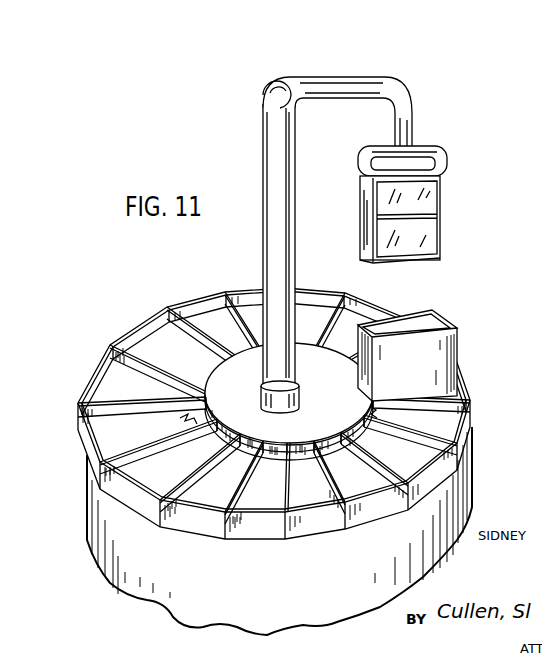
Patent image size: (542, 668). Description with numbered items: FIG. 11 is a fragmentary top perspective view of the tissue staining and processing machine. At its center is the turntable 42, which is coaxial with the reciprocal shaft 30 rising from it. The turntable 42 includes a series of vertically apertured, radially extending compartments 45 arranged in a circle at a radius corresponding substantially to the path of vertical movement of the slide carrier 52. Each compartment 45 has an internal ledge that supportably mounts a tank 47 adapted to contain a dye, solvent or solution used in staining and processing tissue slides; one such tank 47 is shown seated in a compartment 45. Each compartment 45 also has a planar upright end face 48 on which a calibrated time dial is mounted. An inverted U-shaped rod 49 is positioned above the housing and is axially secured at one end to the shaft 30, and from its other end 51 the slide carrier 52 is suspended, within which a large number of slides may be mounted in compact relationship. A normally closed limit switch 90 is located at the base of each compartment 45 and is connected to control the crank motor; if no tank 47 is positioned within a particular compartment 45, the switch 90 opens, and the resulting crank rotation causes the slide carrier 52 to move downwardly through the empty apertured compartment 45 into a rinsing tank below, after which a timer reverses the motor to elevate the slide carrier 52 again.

The turntable 42 is at (268, 461).
The compartment 45 is at (128, 382).
The tank 47 is at (453, 352).
The upright end face 48 is at (430, 483).
The limit switch 90 is at (259, 421).
The shaft 30 is at (284, 140).
The inverted U-shaped rod 49 is at (348, 79).
The other end of rod 51 is at (413, 118).
The slide carrier 52 is at (430, 199).